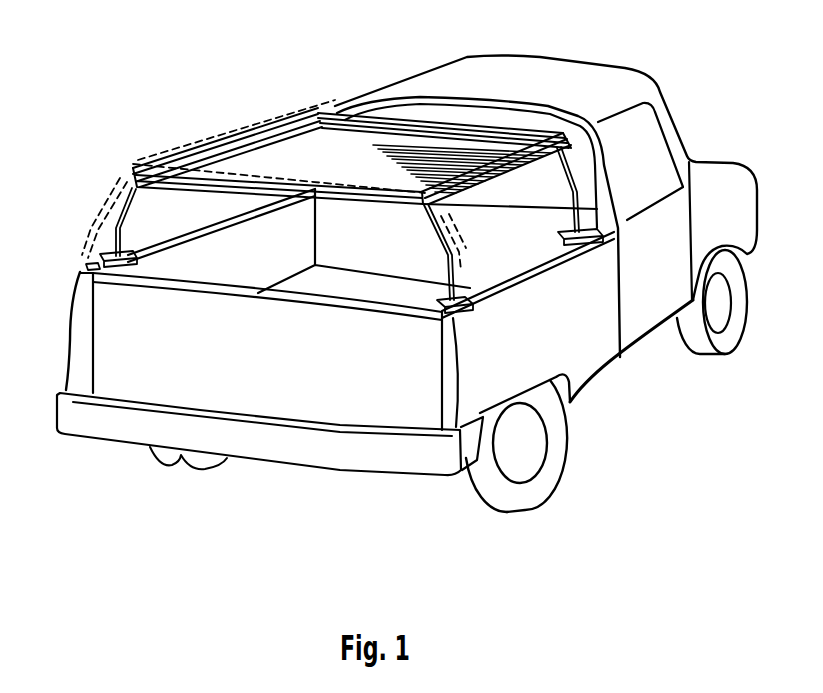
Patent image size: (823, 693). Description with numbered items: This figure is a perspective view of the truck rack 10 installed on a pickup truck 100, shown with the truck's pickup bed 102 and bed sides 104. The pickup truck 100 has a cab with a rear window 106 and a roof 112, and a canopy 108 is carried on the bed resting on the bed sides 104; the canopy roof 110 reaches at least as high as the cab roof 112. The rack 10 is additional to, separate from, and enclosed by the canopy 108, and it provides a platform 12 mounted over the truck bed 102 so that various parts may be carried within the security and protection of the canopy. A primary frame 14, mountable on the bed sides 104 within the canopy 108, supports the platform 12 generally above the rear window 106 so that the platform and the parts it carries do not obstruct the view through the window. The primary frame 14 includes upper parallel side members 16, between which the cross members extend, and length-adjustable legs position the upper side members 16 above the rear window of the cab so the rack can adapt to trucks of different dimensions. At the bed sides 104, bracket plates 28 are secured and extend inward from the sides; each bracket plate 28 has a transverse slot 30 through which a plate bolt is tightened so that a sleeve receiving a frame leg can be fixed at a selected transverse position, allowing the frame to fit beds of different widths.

The pickup truck 100 is at (390, 266).
The pickup bed 102 is at (367, 294).
The bed sides 104 is at (73, 327).
The rear window 106 is at (560, 193).
The canopy 108 is at (117, 183).
The roof 110 is at (293, 118).
The roof 112 is at (473, 70).
The truck rack 10 is at (344, 196).
The platform 12 is at (285, 125).
The primary frame 14 is at (446, 121).
The upper parallel side members 16 is at (183, 157).
The bracket plates 28 is at (137, 260).
The transverse slot 30 is at (88, 267).